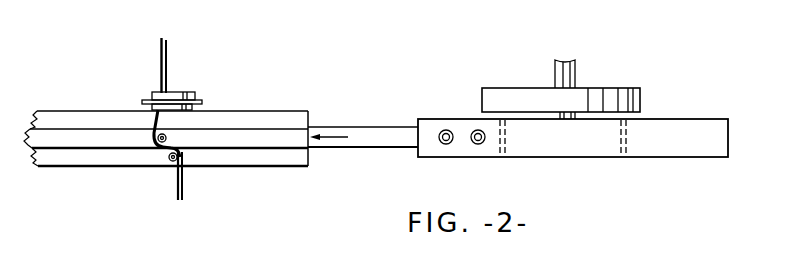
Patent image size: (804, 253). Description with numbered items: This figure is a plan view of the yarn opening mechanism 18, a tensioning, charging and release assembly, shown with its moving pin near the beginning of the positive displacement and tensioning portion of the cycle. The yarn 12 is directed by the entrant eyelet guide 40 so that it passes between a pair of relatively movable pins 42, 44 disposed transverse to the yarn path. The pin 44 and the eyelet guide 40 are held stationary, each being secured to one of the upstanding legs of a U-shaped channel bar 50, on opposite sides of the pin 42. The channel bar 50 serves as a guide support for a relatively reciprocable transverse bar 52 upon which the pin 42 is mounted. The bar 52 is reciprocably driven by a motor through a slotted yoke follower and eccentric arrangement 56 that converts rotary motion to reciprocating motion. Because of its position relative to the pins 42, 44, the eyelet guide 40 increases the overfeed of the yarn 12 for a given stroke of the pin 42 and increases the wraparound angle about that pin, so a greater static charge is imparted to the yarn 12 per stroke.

The yarn 12 is at (160, 67).
The yarn opening mechanism 18 is at (190, 63).
The entrant eyelet guide 40 is at (188, 93).
The pin 42 is at (167, 137).
The pin 44 is at (165, 167).
The U-shaped channel bar 50 is at (283, 174).
The transverse bar 52 is at (389, 126).
The slotted yoke follower and eccentric arrangement 56 is at (661, 102).